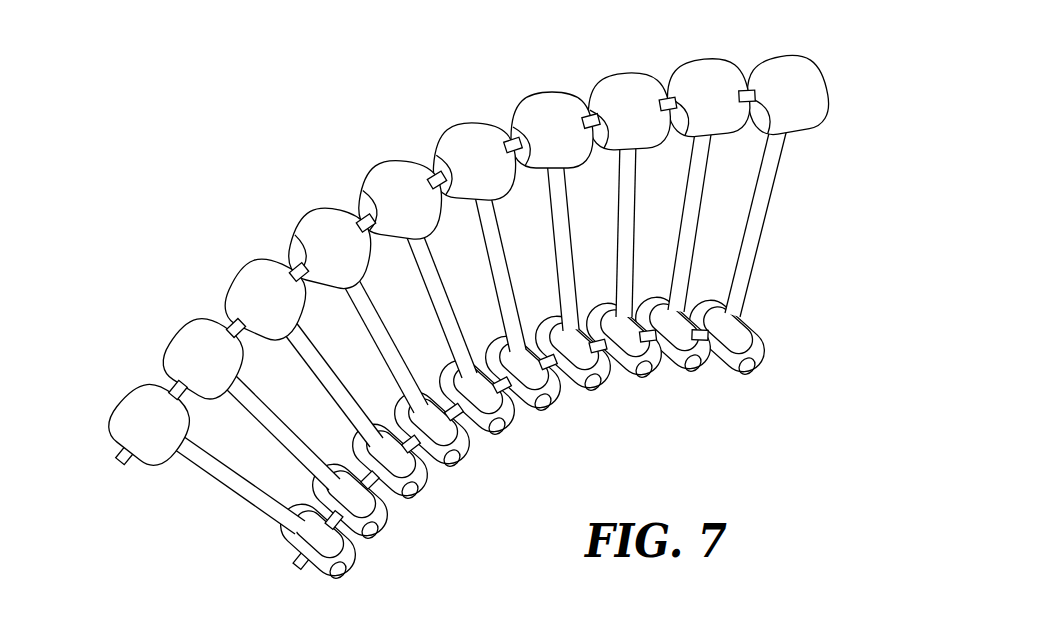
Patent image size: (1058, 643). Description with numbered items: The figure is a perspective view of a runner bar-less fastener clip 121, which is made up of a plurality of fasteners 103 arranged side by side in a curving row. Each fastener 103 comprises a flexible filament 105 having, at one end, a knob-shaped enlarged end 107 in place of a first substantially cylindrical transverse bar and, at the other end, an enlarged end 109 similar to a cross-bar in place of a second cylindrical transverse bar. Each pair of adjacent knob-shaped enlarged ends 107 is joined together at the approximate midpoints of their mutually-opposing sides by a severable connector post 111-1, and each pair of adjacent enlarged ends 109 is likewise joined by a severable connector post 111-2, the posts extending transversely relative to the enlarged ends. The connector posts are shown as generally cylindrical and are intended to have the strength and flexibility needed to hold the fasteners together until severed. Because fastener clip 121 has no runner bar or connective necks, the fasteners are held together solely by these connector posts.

The fastener clip 121 is at (327, 137).
The fastener 103 is at (201, 519).
The flexible filament 105 is at (755, 207).
The knob-shaped enlarged end 107 is at (787, 68).
The enlarged end 109 is at (338, 550).
The severable connector post 111-1 is at (362, 216).
The severable connector post 111-2 is at (465, 413).